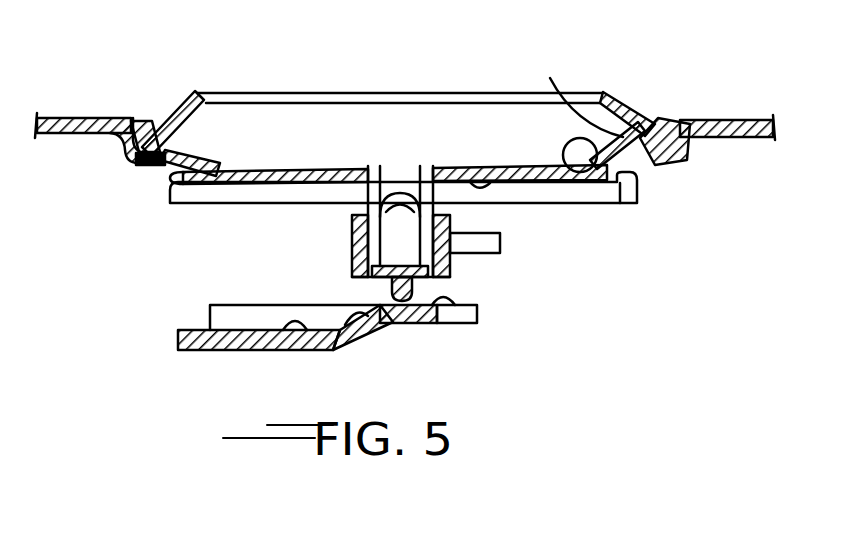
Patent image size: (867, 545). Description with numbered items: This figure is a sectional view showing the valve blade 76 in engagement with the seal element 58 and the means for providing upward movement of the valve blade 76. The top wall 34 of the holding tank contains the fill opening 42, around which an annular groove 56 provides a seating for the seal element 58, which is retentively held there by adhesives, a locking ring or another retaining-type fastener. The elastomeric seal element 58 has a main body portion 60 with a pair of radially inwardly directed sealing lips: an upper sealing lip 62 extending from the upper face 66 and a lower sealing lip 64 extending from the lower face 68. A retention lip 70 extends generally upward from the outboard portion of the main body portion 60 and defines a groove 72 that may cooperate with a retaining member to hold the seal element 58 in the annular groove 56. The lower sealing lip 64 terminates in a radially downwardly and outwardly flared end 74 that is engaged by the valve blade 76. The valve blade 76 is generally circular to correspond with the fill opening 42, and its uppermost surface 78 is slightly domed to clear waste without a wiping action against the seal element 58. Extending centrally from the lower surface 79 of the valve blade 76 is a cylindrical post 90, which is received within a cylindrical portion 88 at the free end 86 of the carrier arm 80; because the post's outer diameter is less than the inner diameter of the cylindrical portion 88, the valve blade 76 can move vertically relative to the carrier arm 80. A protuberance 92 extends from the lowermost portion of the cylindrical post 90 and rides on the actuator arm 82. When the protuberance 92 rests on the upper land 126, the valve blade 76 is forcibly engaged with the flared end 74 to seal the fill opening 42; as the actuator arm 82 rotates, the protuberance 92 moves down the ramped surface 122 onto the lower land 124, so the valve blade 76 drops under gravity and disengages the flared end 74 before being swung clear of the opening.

The top wall 34 is at (60, 116).
The fill opening 42 is at (571, 86).
The annular groove 56 is at (112, 152).
The seal element 58 is at (386, 97).
The main body portion 60 is at (150, 167).
The upper sealing lip 62 is at (200, 92).
The lower sealing lip 64 is at (218, 140).
The upper face 66 is at (148, 135).
The lower face 68 is at (150, 168).
The retention lip 70 is at (140, 127).
The groove 72 is at (145, 120).
The flared end 74 is at (216, 167).
The valve blade 76 is at (245, 202).
The uppermost surface 78 is at (345, 167).
The lower surface 79 is at (488, 170).
The carrier arm 80 is at (352, 238).
The actuator arm 82 is at (217, 350).
The free end 86 is at (498, 250).
The cylindrical portion 88 is at (352, 262).
The cylindrical post 90 is at (437, 193).
The protuberance 92 is at (414, 288).
The ramped surface 122 is at (338, 330).
The lower land 124 is at (284, 350).
The upper land 126 is at (460, 323).